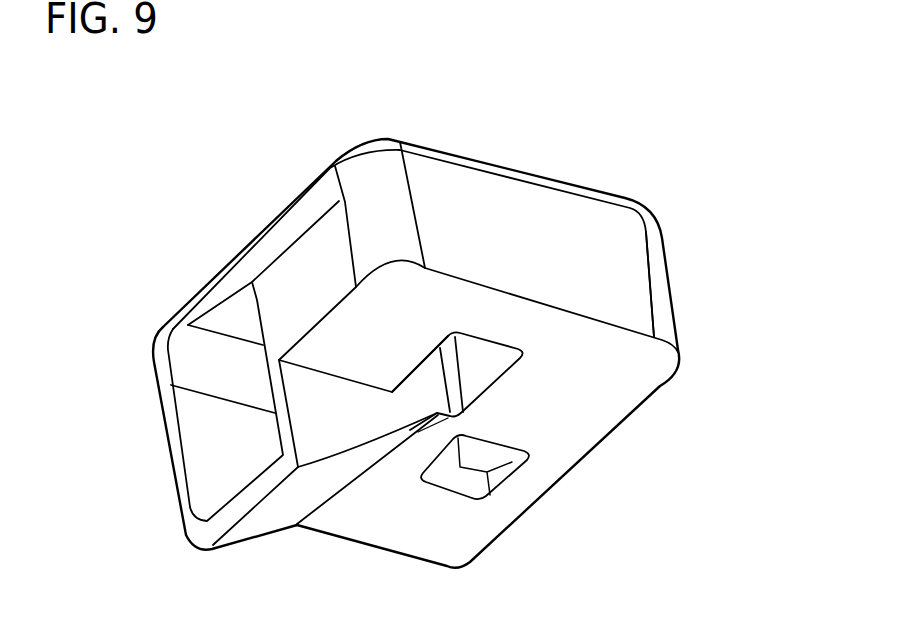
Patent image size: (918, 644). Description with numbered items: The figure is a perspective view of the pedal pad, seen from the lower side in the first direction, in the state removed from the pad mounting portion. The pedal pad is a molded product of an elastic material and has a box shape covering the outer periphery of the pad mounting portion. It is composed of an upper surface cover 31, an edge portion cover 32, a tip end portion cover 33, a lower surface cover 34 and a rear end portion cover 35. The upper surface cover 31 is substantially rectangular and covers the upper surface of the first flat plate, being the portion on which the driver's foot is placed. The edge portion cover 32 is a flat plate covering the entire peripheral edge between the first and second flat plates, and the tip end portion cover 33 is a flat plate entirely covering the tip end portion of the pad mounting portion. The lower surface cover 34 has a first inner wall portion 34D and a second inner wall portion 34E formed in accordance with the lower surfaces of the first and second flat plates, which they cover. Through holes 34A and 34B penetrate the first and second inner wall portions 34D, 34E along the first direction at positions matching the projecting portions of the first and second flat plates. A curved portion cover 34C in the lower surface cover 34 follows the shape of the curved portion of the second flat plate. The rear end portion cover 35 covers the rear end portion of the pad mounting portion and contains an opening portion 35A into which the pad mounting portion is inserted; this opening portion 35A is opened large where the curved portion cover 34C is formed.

The upper surface cover 31 is at (462, 153).
The edge portion cover 32 is at (573, 220).
The tip end portion cover 33 is at (668, 267).
The lower surface cover 34 is at (373, 332).
The through hole 34A is at (487, 340).
The through hole 34B is at (513, 463).
The curved portion cover 34C is at (243, 507).
The first inner wall portion 34D is at (477, 367).
The second inner wall portion 34E is at (452, 475).
The rear end portion cover 35 is at (165, 352).
The opening portion 35A is at (178, 422).